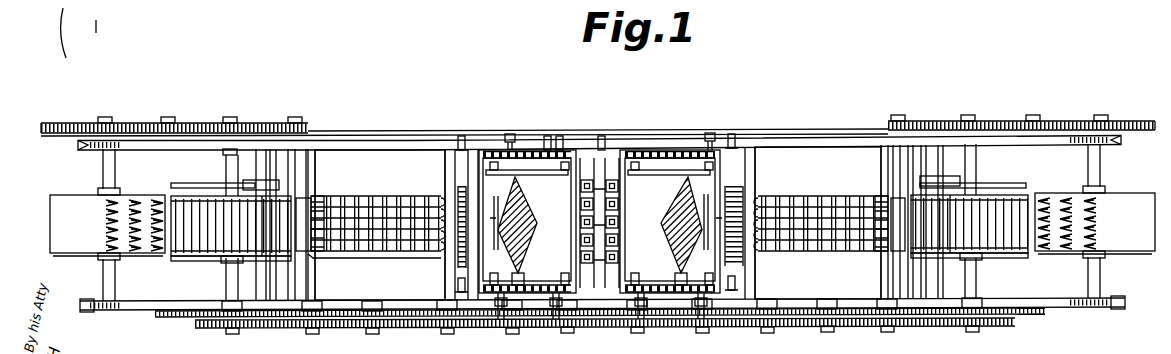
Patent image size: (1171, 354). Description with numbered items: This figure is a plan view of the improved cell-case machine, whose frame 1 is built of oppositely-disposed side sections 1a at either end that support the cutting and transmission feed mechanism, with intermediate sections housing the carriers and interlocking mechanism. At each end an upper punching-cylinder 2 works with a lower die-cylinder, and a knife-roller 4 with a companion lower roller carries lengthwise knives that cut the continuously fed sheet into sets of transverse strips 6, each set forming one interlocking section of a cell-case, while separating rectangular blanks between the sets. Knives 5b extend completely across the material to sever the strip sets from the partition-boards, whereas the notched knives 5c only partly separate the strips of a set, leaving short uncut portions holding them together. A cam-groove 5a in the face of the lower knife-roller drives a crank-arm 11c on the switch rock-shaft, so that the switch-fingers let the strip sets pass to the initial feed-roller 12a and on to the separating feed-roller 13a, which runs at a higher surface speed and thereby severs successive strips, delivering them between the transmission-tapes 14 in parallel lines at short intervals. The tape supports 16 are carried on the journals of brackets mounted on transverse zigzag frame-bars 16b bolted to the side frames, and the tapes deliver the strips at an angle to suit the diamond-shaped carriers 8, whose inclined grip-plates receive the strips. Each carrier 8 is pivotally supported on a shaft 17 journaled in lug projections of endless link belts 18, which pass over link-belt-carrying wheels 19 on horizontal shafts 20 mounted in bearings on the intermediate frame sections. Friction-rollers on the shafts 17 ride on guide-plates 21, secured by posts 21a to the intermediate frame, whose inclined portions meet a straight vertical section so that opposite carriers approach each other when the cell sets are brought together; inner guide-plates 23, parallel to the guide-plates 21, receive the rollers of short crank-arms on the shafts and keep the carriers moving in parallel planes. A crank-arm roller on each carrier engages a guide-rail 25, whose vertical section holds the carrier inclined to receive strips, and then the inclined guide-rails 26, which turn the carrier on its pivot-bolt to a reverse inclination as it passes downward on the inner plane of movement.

The frame 1 is at (598, 208).
The side sections 1a is at (833, 108).
The upper punching-cylinder 2 is at (602, 224).
The knife-roller 4 is at (200, 200).
The cam-groove 5a is at (190, 178).
The knives 5b is at (998, 249).
The knives 5c is at (944, 238).
The transverse strips 6 is at (360, 196).
The carriers 8 is at (448, 180).
The crank-arm 11c is at (946, 165).
The initial feed-roller 12a is at (300, 238).
The separating feed-roller 13a is at (316, 190).
The transmission-tapes 14 is at (390, 200).
The conveyor support 16 is at (436, 246).
The zigzag frame-bars 16b is at (758, 150).
The shafts 17 is at (522, 270).
The endless link belts 18 is at (523, 150).
The link-belt-carrying wheels 19 is at (500, 283).
The horizontal shafts 20 is at (502, 130).
The guide-plates 21 is at (476, 145).
The posts 21a is at (601, 223).
The guide-plates 23 is at (598, 180).
The guide-rail 25 is at (605, 220).
The inclined guide-rails 26 is at (489, 190).